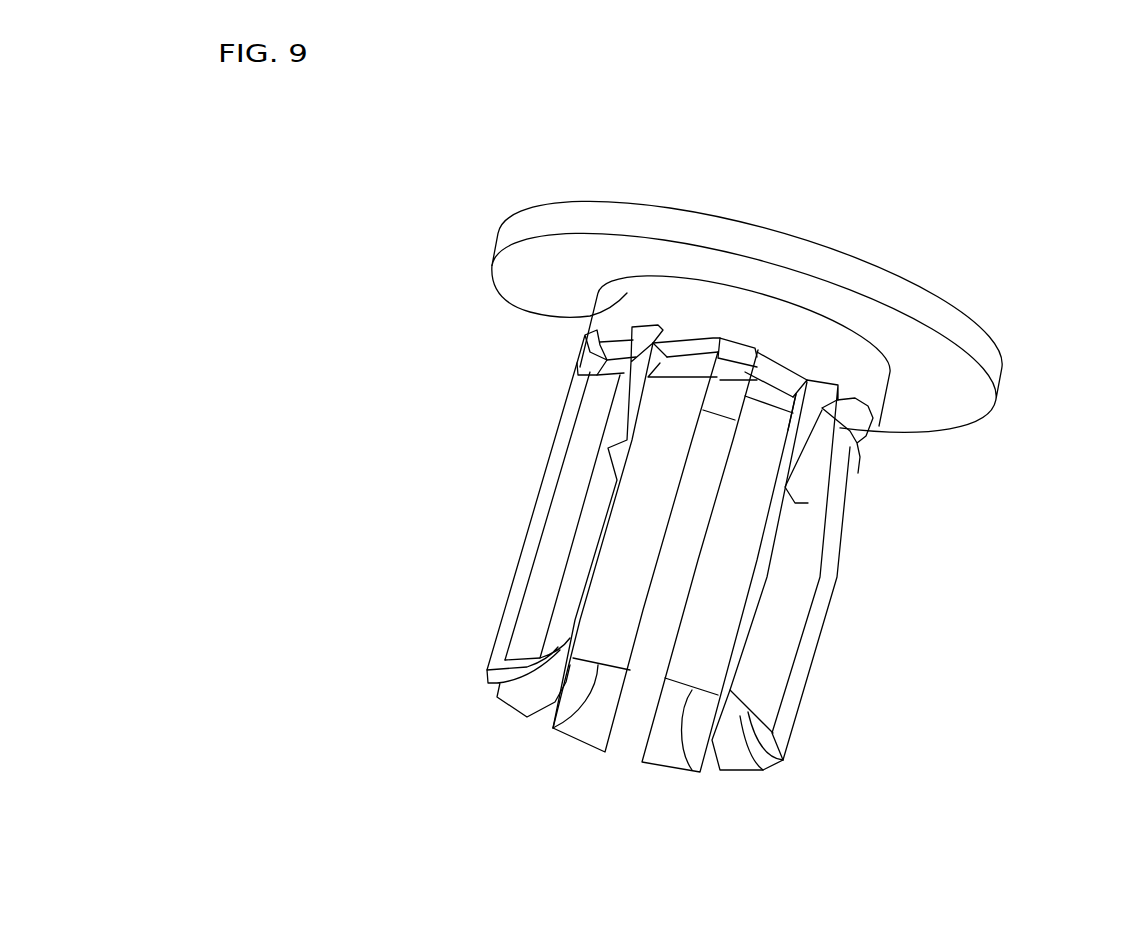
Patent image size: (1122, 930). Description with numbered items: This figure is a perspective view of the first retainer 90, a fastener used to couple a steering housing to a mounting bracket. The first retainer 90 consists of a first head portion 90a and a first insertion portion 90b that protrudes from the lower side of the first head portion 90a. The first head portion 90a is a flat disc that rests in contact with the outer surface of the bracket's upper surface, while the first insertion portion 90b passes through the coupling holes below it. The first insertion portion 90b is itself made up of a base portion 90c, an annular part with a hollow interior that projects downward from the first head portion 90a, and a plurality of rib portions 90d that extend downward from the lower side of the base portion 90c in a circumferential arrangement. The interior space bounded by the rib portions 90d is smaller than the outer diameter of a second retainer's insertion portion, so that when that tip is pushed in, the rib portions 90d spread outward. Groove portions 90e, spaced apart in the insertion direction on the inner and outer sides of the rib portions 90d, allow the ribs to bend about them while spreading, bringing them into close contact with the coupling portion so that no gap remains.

The first retainer 90 is at (468, 173).
The first head portion 90a is at (968, 396).
The first insertion portion 90b is at (352, 312).
The base portion 90c is at (585, 353).
The rib portions 90d is at (565, 503).
The groove portions 90e is at (866, 432).